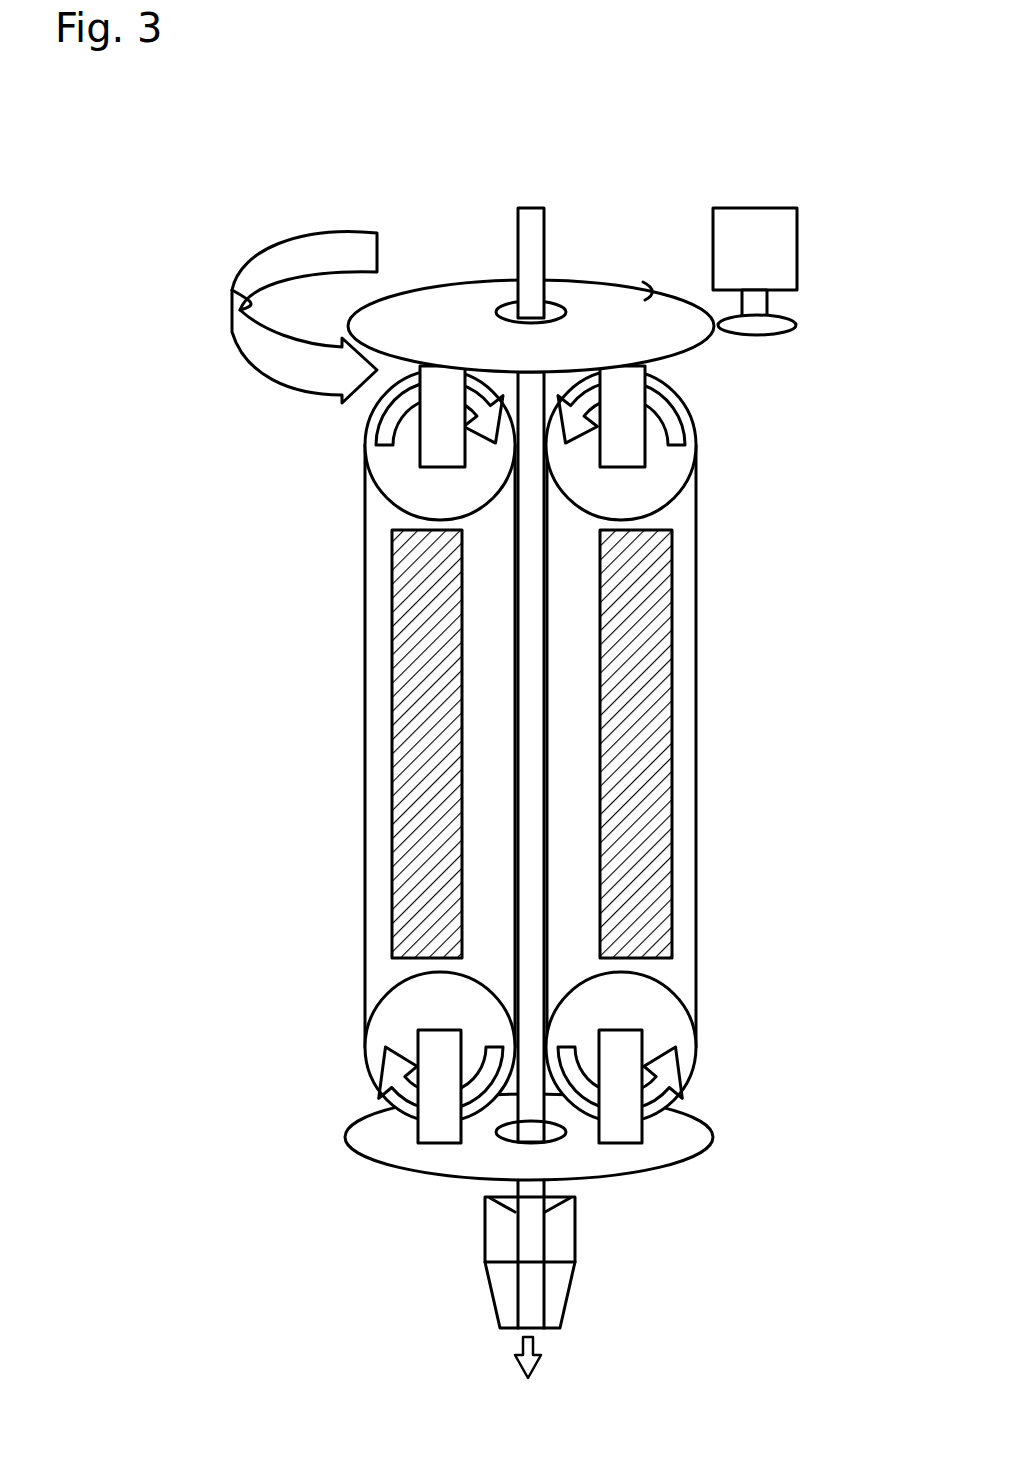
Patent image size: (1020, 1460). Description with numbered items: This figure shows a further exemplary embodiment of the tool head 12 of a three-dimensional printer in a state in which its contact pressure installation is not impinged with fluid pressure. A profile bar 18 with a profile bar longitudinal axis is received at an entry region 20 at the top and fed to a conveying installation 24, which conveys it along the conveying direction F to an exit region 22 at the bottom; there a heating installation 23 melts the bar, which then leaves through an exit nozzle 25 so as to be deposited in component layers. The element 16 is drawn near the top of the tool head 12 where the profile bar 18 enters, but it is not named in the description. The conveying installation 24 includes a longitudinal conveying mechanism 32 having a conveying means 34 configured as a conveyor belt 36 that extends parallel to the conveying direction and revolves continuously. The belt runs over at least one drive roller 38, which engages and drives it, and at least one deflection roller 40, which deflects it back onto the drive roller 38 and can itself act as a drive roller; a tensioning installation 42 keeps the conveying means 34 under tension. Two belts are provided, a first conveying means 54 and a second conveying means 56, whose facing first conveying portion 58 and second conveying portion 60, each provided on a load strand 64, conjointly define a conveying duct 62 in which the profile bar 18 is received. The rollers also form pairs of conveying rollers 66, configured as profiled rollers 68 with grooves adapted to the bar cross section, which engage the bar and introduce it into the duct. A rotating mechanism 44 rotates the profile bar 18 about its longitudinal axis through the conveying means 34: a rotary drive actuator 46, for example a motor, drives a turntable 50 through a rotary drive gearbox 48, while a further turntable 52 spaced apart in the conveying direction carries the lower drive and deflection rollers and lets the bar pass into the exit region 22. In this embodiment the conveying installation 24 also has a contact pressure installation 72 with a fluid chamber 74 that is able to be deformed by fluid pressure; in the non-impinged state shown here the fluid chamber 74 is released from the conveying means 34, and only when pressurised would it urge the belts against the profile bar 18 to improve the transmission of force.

The tool head 12 is at (280, 210).
The drive shaft 16 is at (539, 258).
The profile bar 18 is at (520, 243).
The entry region 20 is at (497, 312).
The exit region 22 is at (509, 1224).
The heating installation 23 is at (509, 1224).
The conveying installation 24 is at (290, 433).
The exit nozzle 25 is at (562, 1138).
The longitudinal conveying mechanism 32 is at (350, 527).
The conveying means 34 is at (531, 744).
The conveyor belt 36 is at (531, 744).
The drive roller 38 is at (380, 1023).
The deflection roller 40 is at (370, 458).
The tensioning installation 42 is at (446, 468).
The rotating mechanism 44 is at (759, 234).
The rotary drive actuator 46 is at (759, 234).
The rotary drive gearbox 48 is at (710, 180).
The turntable 50 is at (645, 273).
The further turntable 52 is at (695, 1130).
The first conveying means 54 is at (531, 744).
The second conveying means 56 is at (365, 593).
The first conveying portion 58 is at (529, 757).
The second conveying portion 60 is at (529, 757).
The conveying duct 62 is at (529, 757).
The load strand 64 is at (545, 673).
The conveying rollers 66 is at (529, 720).
The profiled rollers 68 is at (500, 397).
The contact pressure installation 72 is at (529, 744).
The fluid chamber 74 is at (400, 787).